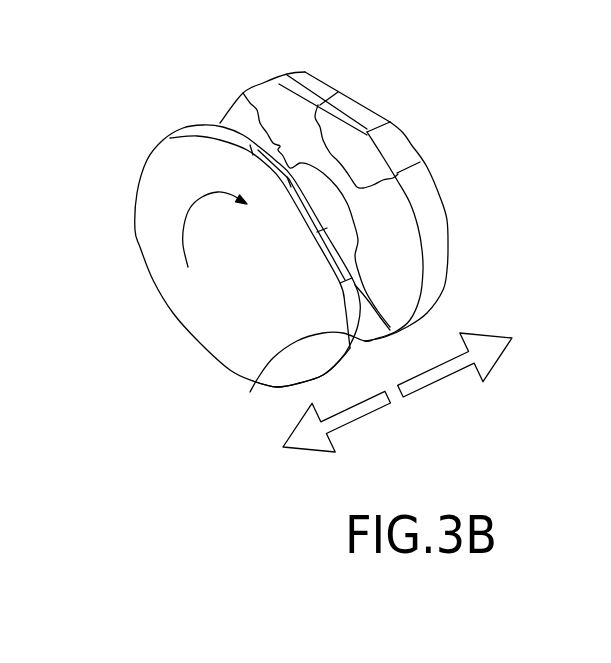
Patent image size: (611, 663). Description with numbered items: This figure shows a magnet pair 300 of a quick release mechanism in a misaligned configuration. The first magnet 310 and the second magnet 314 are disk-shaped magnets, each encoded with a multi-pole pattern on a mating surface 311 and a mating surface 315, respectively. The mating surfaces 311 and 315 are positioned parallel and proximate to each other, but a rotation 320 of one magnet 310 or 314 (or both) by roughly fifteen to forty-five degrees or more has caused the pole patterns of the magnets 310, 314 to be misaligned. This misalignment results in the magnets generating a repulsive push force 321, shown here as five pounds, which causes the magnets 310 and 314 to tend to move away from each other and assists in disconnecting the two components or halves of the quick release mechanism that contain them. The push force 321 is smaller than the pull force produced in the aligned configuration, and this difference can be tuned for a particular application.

The knob assembly 300 is at (301, 241).
The first magnet 310 is at (135, 289).
The mating surface 311 is at (287, 391).
The second magnet 314 is at (458, 190).
The mating surface 315 is at (418, 256).
The rotation 320 is at (195, 194).
The push force 321 is at (455, 369).